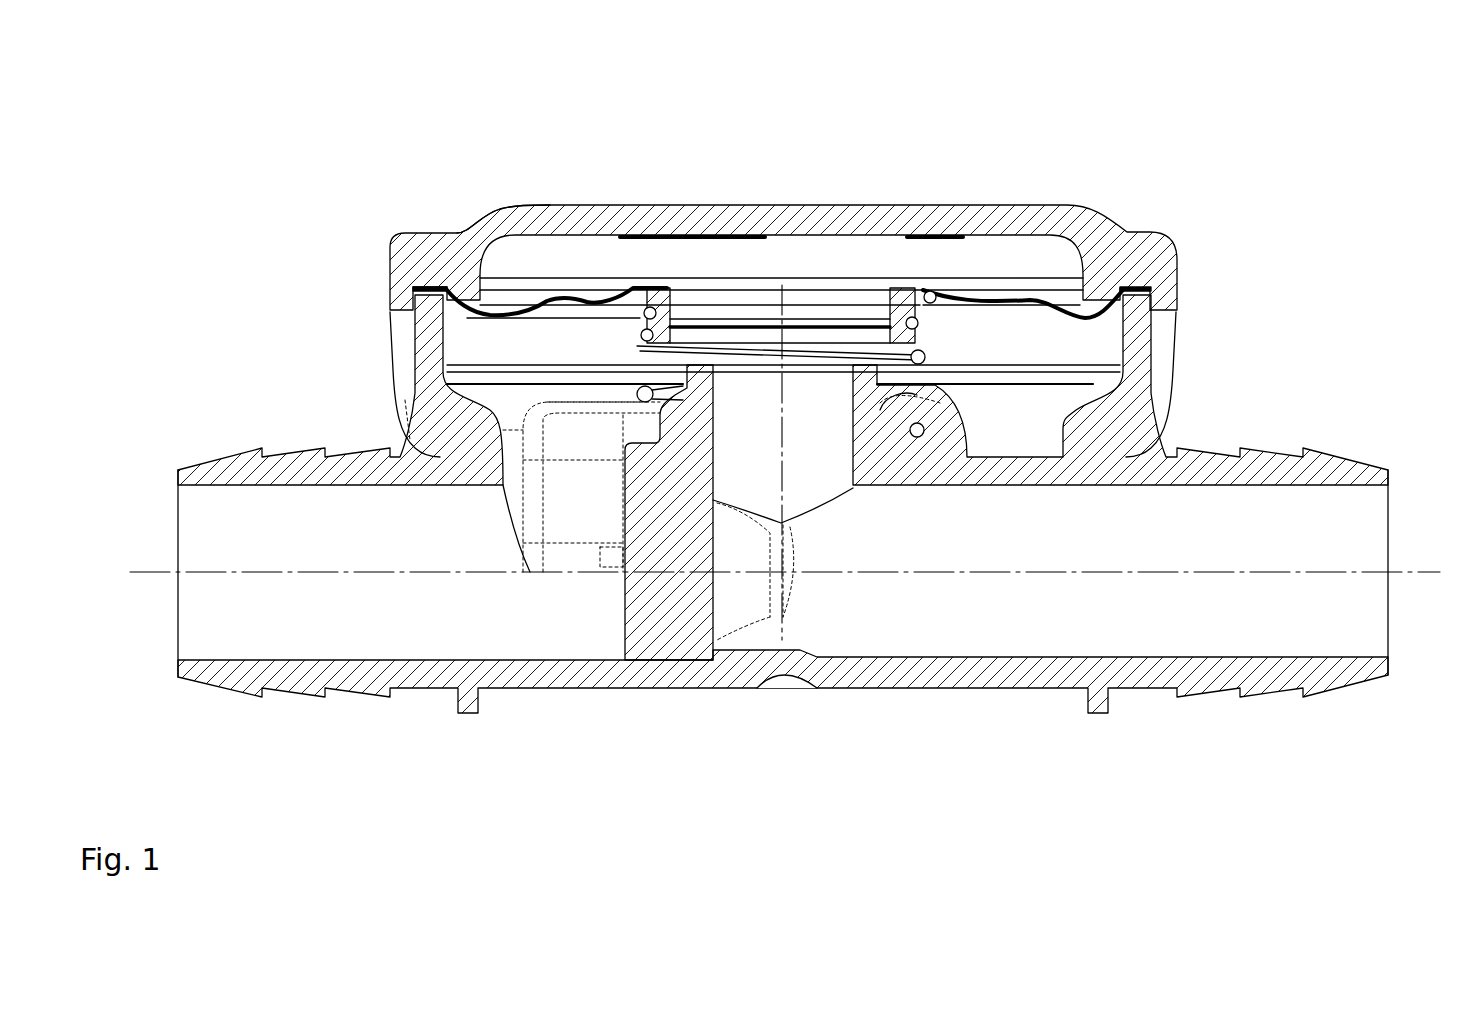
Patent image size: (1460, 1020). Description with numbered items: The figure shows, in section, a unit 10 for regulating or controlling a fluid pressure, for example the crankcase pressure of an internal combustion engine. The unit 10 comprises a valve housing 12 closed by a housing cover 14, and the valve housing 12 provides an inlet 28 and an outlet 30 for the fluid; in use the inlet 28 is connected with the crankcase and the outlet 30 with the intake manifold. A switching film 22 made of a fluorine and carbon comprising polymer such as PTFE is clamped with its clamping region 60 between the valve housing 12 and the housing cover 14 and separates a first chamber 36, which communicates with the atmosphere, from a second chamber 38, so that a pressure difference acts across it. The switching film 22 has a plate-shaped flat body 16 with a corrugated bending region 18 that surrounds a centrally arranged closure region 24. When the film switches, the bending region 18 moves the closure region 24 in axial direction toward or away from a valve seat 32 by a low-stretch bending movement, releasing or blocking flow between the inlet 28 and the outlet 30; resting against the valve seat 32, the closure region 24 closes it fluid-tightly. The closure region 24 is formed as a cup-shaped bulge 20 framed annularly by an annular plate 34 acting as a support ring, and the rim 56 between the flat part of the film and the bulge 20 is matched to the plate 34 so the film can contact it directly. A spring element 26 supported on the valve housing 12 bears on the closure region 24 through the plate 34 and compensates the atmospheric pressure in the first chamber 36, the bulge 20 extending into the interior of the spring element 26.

The unit 10 is at (1278, 154).
The valve housing 12 is at (1143, 368).
The housing cover 14 is at (1127, 232).
The plate-shaped flat body 16 is at (539, 262).
The corrugated bending region 18 is at (518, 297).
The cup-shaped bulge 20 is at (702, 326).
The switching film 22 is at (583, 300).
The closure region 24 is at (820, 300).
The spring element 26 is at (926, 357).
The inlet 28 is at (238, 472).
The outlet 30 is at (1343, 468).
The valve seat 32 is at (697, 364).
The annular plate 34 is at (933, 290).
The first chamber 36 is at (571, 278).
The second chamber 38 is at (477, 353).
The rim 56 is at (672, 274).
The clamping region 60 is at (439, 290).